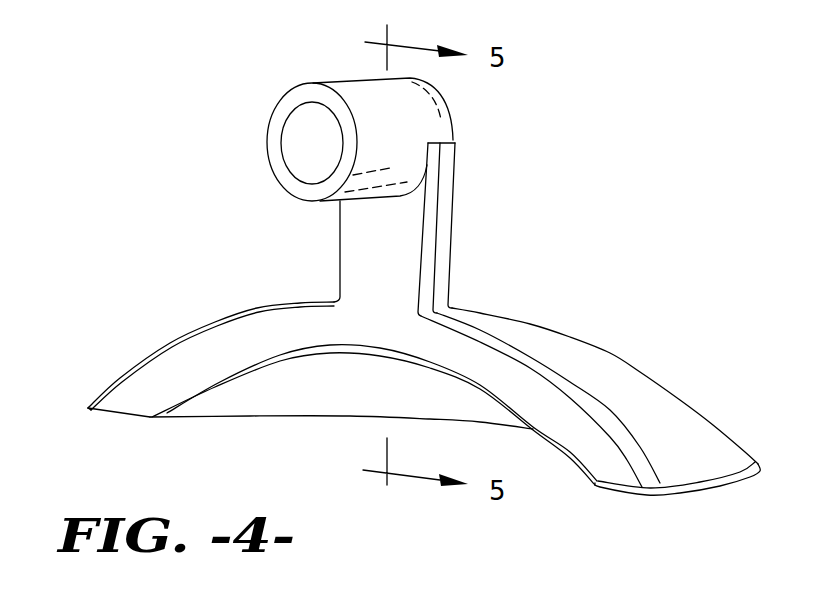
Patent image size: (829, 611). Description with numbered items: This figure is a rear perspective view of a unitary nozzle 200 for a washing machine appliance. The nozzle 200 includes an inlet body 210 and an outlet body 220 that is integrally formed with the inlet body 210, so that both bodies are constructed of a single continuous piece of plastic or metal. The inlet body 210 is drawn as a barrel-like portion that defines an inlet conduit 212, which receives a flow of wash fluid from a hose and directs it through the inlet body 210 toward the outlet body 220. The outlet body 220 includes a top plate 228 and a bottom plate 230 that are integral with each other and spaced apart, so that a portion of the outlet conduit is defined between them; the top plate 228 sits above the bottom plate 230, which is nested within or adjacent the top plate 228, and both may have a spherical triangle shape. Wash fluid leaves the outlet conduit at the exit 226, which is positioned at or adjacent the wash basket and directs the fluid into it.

The nozzle 200 is at (124, 202).
The inlet body 210 is at (441, 234).
The inlet conduit 212 is at (312, 137).
The outlet body 220 is at (628, 387).
The exit 226 is at (208, 418).
The top plate 228 is at (208, 323).
The bottom plate 230 is at (308, 402).